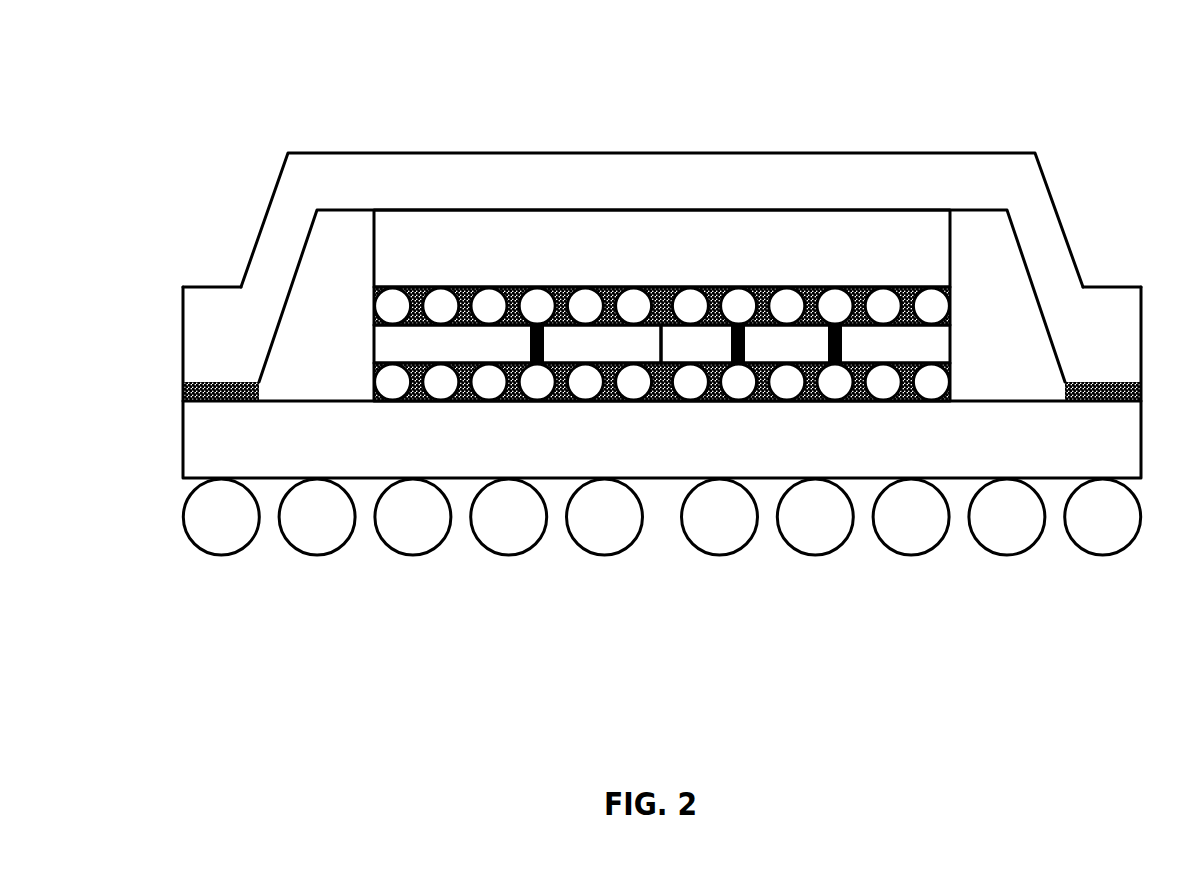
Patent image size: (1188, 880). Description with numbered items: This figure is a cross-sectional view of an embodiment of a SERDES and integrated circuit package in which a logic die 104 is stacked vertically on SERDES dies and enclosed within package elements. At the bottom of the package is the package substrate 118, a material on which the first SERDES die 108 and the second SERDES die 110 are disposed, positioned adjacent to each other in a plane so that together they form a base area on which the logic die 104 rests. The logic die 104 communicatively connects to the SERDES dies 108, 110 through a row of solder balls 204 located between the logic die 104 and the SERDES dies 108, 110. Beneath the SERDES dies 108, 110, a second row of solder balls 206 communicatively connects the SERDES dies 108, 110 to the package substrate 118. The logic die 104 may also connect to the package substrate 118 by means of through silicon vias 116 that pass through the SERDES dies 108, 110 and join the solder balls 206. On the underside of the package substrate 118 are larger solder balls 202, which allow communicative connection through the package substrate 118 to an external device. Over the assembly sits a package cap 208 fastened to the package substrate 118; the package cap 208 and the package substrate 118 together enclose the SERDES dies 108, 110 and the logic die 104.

The logic die 104 is at (408, 256).
The first SERDES die 108 is at (415, 347).
The second SERDES die 110 is at (922, 347).
The through silicon vias 116 is at (530, 337).
The package substrate 118 is at (240, 445).
The solder balls 202 is at (323, 537).
The solder balls 204 is at (740, 297).
The solder balls 206 is at (830, 393).
The package cap 208 is at (913, 178).